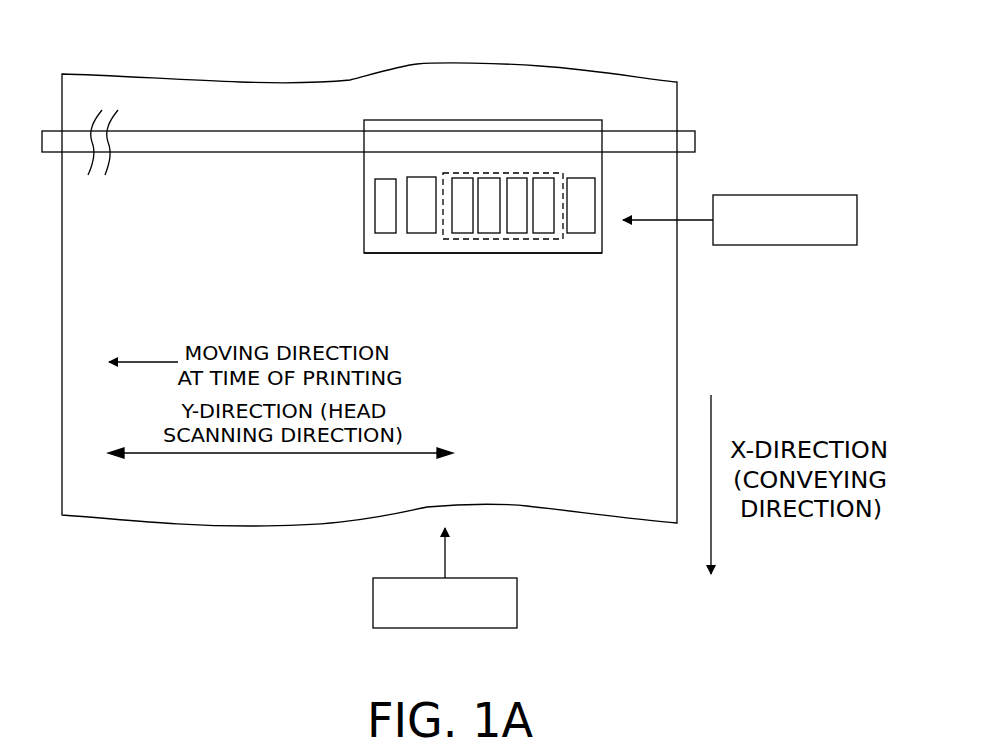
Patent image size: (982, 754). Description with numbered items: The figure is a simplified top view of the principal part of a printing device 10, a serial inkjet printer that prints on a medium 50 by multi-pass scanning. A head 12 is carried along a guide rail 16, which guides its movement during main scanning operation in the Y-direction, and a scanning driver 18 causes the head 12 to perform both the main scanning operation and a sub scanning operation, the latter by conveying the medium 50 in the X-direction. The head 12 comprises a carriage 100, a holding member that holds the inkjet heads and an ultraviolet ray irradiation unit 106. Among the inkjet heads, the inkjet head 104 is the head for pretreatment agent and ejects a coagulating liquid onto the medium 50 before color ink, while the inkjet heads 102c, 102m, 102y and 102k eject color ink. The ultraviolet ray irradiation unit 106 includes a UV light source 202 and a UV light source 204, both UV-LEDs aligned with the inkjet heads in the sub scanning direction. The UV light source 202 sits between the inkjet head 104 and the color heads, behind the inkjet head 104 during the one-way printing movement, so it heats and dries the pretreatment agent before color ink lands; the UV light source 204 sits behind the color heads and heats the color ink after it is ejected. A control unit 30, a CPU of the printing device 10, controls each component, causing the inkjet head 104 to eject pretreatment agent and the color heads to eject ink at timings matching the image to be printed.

The printing device 10 is at (720, 58).
The head 12 is at (364, 187).
The guide rail 16 is at (183, 153).
The scanning driver 18 is at (772, 193).
The control unit 30 is at (517, 605).
The medium 50 is at (223, 505).
The carriage 100 is at (573, 253).
The inkjet head 102m is at (490, 178).
The inkjet head 102k is at (547, 182).
The inkjet head 102c is at (462, 233).
The inkjet head 102y is at (514, 233).
The inkjet head 104 is at (385, 233).
The ultraviolet ray irradiation unit 106 is at (603, 422).
The UV light source 202 is at (420, 233).
The UV light source 204 is at (595, 253).